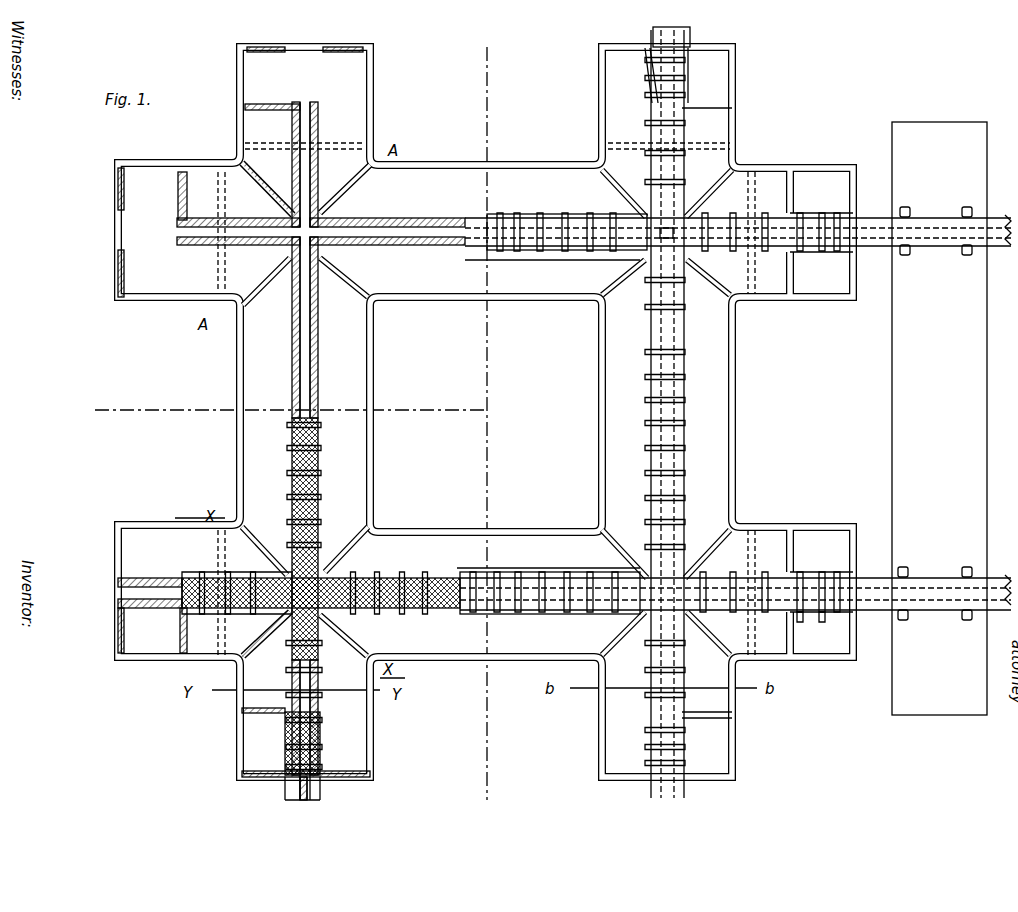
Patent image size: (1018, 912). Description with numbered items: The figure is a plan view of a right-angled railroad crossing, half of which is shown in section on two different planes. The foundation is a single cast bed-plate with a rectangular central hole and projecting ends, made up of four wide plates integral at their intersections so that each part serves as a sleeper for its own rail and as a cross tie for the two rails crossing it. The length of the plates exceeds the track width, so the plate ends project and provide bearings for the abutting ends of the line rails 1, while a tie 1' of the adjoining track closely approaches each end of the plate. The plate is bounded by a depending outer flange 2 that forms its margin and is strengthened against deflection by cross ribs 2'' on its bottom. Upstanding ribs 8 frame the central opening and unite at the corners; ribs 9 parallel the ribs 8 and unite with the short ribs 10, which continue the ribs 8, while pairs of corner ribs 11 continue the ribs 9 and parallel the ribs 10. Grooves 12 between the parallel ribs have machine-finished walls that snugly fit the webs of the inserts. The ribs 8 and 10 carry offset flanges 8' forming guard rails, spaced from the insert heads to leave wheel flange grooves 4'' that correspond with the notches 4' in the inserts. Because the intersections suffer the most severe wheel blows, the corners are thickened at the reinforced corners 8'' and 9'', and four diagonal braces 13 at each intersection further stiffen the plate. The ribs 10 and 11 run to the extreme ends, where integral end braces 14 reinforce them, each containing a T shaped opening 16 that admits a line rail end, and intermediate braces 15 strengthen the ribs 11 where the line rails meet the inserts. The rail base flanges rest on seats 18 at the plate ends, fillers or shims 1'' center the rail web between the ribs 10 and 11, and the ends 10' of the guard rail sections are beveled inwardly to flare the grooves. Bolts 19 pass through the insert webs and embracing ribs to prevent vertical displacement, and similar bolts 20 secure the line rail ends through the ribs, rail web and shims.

The line rail 1 is at (648, 414).
The tie 1' is at (939, 418).
The filler or shim 1'' is at (302, 756).
The outer flange 2 is at (485, 412).
The cross rib 2'' is at (736, 182).
The notch 4' is at (669, 185).
The wheel flange groove 4'' is at (689, 413).
The upstanding rib 8 is at (594, 398).
The offset flange or guard rail 8' is at (628, 436).
The thickened or reinforced corner 8'' is at (564, 578).
The rib 9 is at (487, 414).
The thickened or reinforced corner 9'' is at (293, 539).
The short rib 10 is at (481, 416).
The beveled end of guard rail section 10' is at (727, 401).
The corner rib 11 is at (292, 160).
The groove 12 is at (432, 218).
The diagonal brace 13 is at (275, 295).
The end brace 14 is at (853, 185).
The intermediate brace 15 is at (795, 200).
The T shaped opening 16 is at (225, 575).
The end portion or seat 18 is at (240, 350).
The bolt 19 is at (322, 428).
The bolt 20 is at (822, 612).